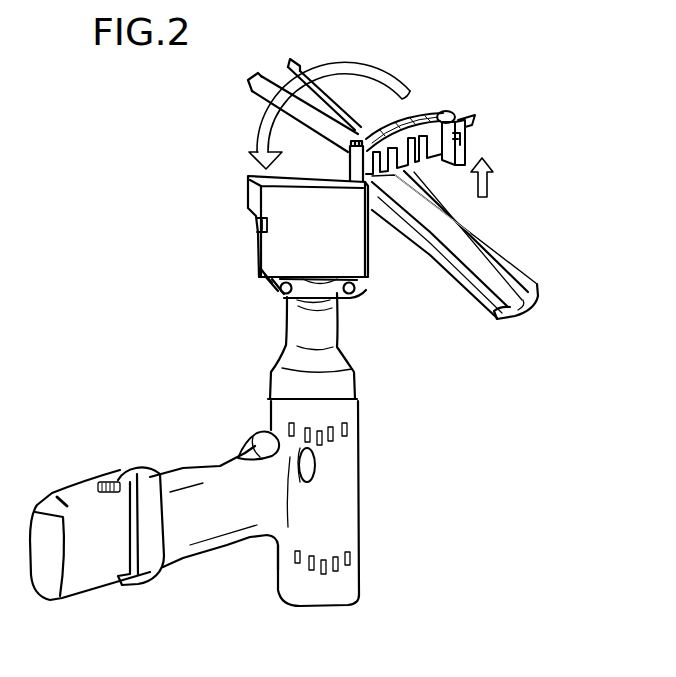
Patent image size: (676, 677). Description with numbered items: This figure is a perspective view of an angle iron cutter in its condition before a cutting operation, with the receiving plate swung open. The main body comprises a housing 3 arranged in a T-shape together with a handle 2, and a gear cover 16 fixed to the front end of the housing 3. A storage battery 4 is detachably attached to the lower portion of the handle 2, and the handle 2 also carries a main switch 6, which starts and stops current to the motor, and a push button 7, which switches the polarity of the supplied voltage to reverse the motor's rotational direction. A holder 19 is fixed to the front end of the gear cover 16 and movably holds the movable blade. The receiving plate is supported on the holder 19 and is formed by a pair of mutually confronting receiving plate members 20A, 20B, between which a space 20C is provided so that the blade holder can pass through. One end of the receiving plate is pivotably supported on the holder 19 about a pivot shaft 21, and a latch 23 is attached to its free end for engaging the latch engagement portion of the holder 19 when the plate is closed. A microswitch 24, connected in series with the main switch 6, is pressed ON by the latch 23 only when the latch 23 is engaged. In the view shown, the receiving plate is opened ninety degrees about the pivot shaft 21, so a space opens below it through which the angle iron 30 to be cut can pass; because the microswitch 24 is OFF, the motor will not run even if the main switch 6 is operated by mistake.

The handle 2 is at (221, 533).
The housing 3 is at (360, 427).
The storage battery 4 is at (97, 570).
The main switch 6 is at (258, 435).
The push button 7 is at (314, 468).
The gear cover 16 is at (330, 337).
The holder 19 is at (262, 268).
The receiving plate member 20A is at (423, 163).
The receiving plate member 20B is at (397, 79).
The space 20C is at (403, 110).
The pivot shaft 21 is at (360, 141).
The latch 23 is at (473, 139).
The microswitch 24 is at (257, 222).
The angle iron 30 is at (474, 241).